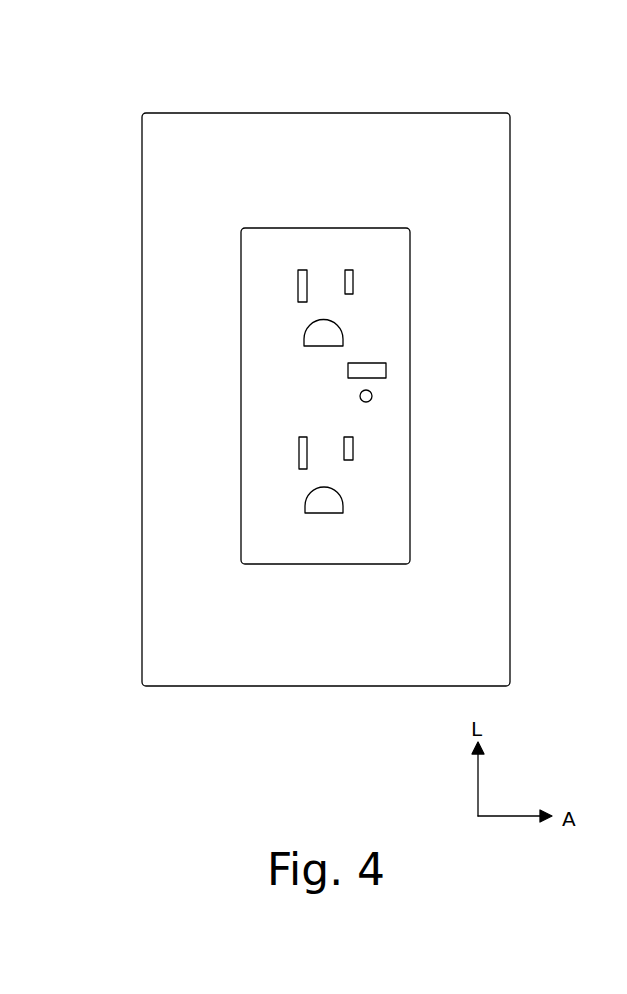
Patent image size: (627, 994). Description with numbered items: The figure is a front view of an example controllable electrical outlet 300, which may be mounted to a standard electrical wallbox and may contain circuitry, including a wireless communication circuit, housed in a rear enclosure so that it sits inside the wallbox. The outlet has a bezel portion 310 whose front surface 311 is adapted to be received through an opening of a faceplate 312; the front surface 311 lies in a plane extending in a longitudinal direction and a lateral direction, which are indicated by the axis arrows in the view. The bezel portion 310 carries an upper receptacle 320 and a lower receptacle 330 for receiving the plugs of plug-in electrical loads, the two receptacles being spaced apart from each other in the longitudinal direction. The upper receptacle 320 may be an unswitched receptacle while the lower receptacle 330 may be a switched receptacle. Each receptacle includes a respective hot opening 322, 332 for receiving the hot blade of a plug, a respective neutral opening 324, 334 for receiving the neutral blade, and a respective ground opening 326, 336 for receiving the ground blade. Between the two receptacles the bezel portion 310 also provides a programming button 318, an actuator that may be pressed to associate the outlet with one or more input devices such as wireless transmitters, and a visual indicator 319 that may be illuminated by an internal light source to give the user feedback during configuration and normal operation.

The controllable electrical outlet 300 is at (218, 100).
The bezel portion 310 is at (390, 534).
The front surface 311 is at (302, 398).
The faceplate 312 is at (465, 145).
The programming button 318 is at (370, 369).
The visual indicator 319 is at (372, 399).
The upper receptacle 320 is at (282, 315).
The hot opening 322 is at (347, 280).
The neutral opening 324 is at (302, 280).
The ground opening 326 is at (330, 330).
The lower receptacle 330 is at (282, 483).
The hot opening 332 is at (348, 449).
The neutral opening 334 is at (300, 452).
The ground opening 336 is at (325, 497).